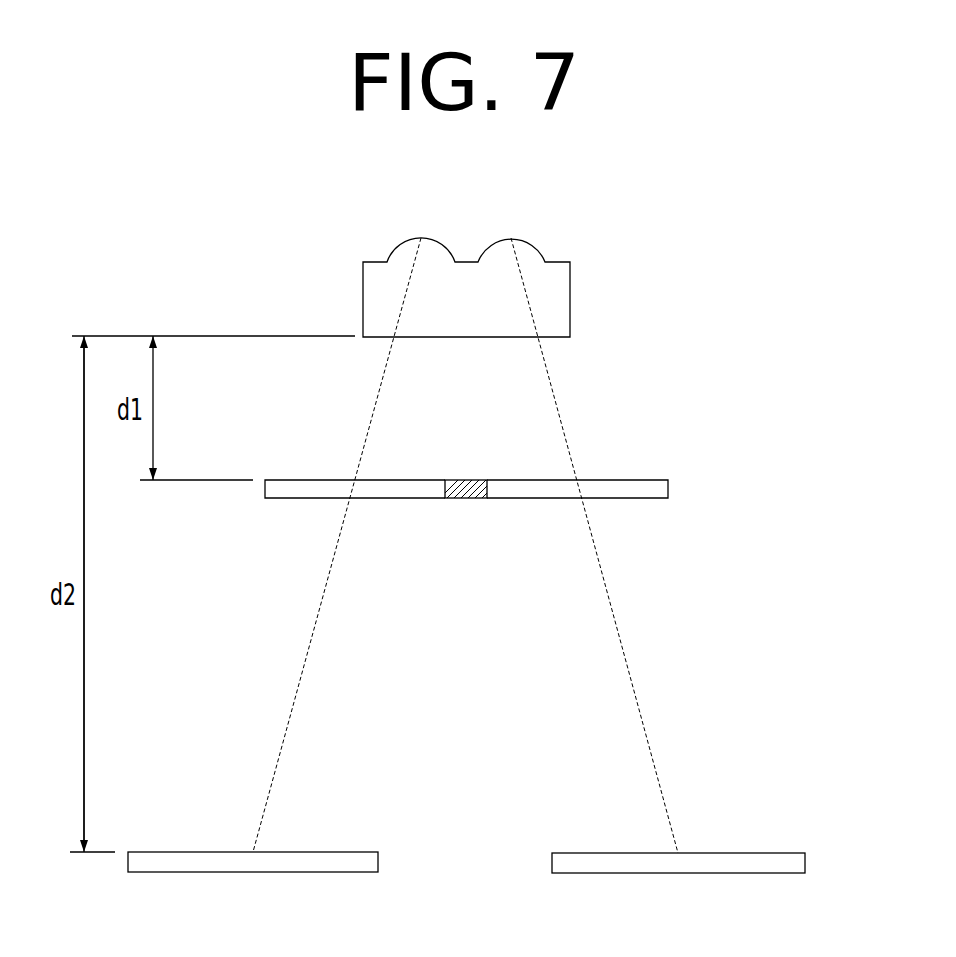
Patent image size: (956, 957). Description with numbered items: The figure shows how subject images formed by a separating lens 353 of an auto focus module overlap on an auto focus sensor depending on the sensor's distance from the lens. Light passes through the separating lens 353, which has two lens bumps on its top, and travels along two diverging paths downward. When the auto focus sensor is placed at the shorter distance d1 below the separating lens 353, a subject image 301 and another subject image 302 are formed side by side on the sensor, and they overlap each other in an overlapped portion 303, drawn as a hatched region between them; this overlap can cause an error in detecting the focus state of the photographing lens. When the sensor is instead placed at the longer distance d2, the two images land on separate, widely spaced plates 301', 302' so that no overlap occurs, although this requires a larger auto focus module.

The separating lens 353 is at (582, 297).
The subject image 301 is at (342, 525).
The another subject image 302 is at (591, 525).
The overlapped portion 303 is at (463, 498).
The projected image of first region 301' is at (253, 897).
The projected image of second region 302' is at (679, 898).